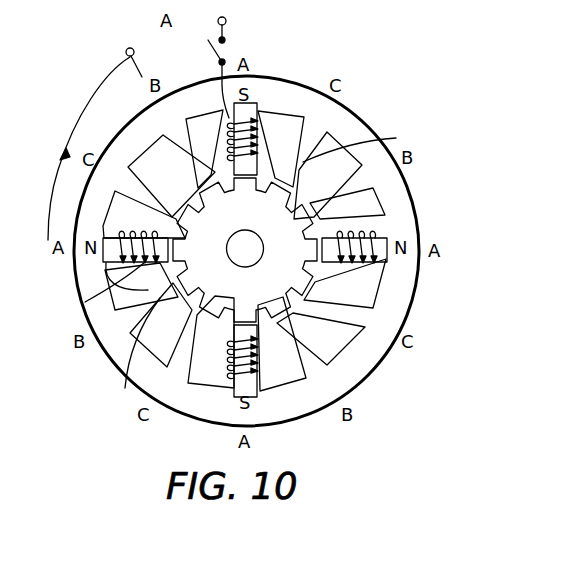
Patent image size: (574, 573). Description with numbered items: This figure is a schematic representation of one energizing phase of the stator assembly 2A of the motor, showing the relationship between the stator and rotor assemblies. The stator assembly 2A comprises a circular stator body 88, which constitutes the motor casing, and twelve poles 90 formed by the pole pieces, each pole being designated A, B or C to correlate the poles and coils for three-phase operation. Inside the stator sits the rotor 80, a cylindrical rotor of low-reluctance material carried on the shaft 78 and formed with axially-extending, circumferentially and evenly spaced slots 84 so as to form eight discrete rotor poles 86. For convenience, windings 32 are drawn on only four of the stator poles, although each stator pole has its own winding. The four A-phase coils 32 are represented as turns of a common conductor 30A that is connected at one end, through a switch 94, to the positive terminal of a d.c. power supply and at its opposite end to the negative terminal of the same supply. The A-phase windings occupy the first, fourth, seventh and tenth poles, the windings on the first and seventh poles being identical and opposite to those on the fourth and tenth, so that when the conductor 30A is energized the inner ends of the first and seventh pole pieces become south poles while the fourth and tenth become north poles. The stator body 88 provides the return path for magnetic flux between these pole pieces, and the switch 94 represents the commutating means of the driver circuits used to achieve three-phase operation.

The stator assembly 2A is at (394, 141).
The common conductor 30A is at (223, 70).
The windings 32 is at (257, 153).
The shaft 78 is at (247, 232).
The rotor 80 is at (291, 274).
The slots 84 is at (280, 305).
The rotor poles 86 is at (300, 302).
The stator body 88 is at (419, 200).
The poles 90 is at (318, 216).
The switch 94 is at (207, 48).